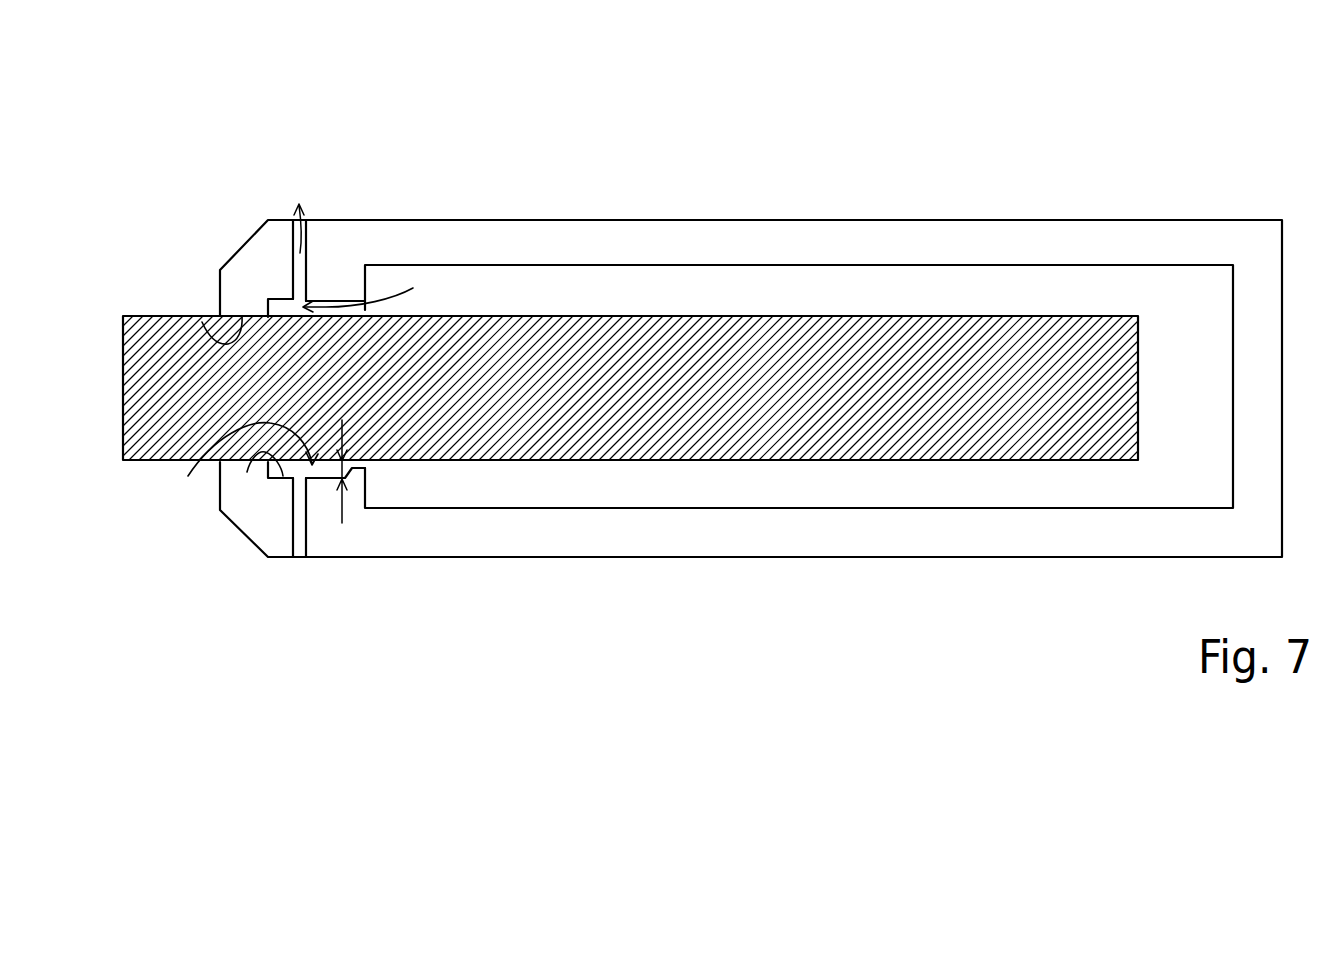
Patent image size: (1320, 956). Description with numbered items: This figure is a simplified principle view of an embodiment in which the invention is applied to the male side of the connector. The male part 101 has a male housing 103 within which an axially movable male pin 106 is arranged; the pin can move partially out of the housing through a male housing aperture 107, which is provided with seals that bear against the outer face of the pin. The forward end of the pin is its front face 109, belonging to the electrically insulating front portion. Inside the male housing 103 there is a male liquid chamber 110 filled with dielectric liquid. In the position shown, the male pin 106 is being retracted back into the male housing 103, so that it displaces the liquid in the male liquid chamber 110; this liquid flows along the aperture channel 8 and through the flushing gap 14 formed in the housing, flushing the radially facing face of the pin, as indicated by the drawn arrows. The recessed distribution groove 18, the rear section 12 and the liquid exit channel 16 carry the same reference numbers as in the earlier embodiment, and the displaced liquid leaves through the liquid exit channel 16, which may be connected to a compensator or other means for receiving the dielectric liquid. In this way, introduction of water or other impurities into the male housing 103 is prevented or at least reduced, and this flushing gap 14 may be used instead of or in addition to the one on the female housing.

The male part 101 is at (842, 143).
The male housing 103 is at (680, 242).
The male liquid chamber 110 is at (538, 290).
The male pin 106 is at (948, 315).
The front face 109 is at (123, 356).
The male housing aperture 107 is at (202, 322).
The rear section 12 is at (343, 316).
The liquid exit channel 16 is at (305, 542).
The flushing gap 14 is at (352, 467).
The aperture channel 8 is at (207, 462).
The recessed distribution groove 18 is at (247, 472).